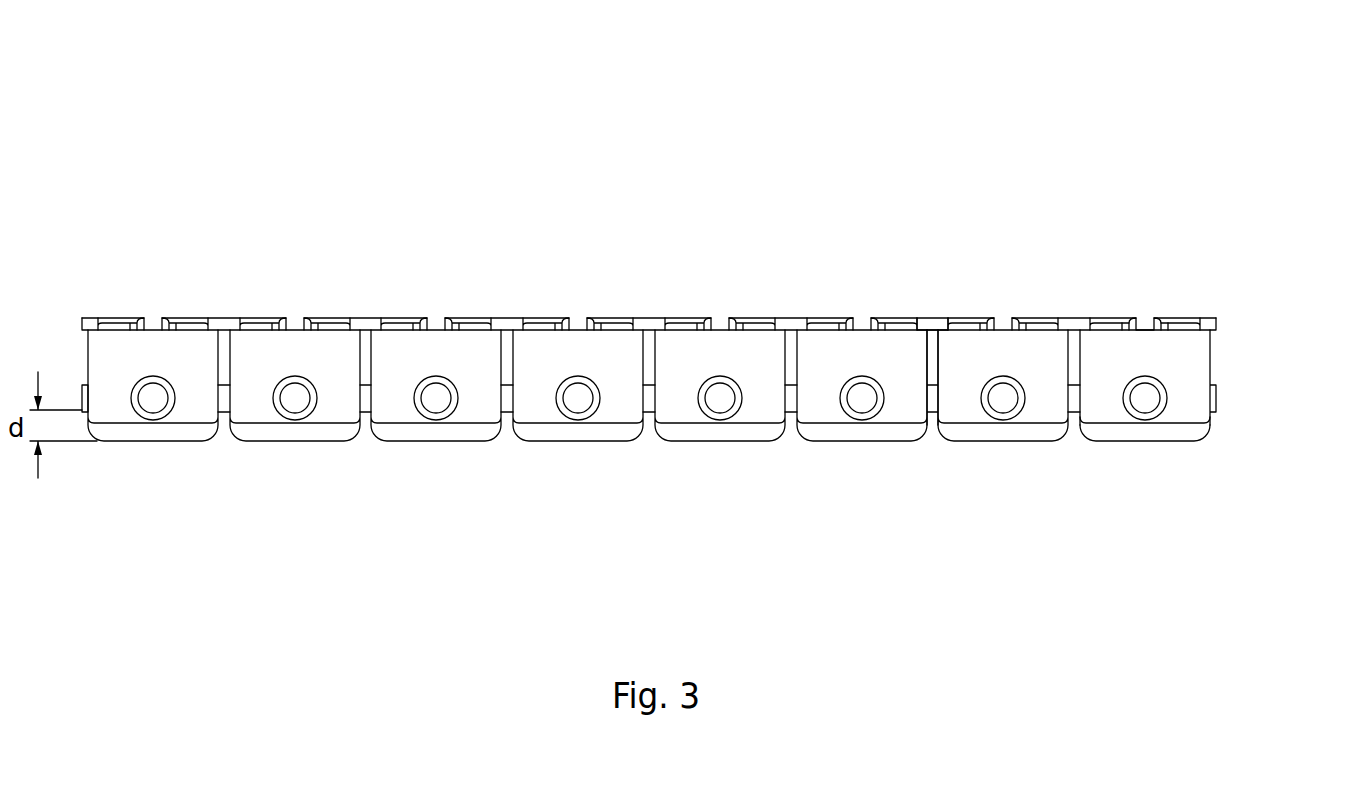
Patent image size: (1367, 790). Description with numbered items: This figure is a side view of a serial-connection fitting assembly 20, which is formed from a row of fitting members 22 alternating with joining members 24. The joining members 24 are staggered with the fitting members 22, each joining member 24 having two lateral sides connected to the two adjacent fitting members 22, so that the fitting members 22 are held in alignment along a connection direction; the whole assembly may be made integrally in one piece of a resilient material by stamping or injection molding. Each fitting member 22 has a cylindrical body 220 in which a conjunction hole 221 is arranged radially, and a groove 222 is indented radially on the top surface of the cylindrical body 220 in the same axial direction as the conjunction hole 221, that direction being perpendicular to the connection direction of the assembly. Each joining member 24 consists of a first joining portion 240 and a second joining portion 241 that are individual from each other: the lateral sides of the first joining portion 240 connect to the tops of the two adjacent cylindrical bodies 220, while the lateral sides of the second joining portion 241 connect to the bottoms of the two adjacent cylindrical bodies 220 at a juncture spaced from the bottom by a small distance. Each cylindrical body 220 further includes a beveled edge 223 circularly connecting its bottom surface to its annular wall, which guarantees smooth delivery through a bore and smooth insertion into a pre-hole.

The serial-connection fitting assembly 20 is at (740, 187).
The fitting member 22 is at (1240, 357).
The joining member 24 is at (945, 290).
The cylindrical body 220 is at (1208, 358).
The conjunction hole 221 is at (1144, 398).
The groove 222 is at (1143, 323).
The beveled edge 223 is at (1205, 442).
The first joining portion 240 is at (930, 318).
The second joining portion 241 is at (932, 415).